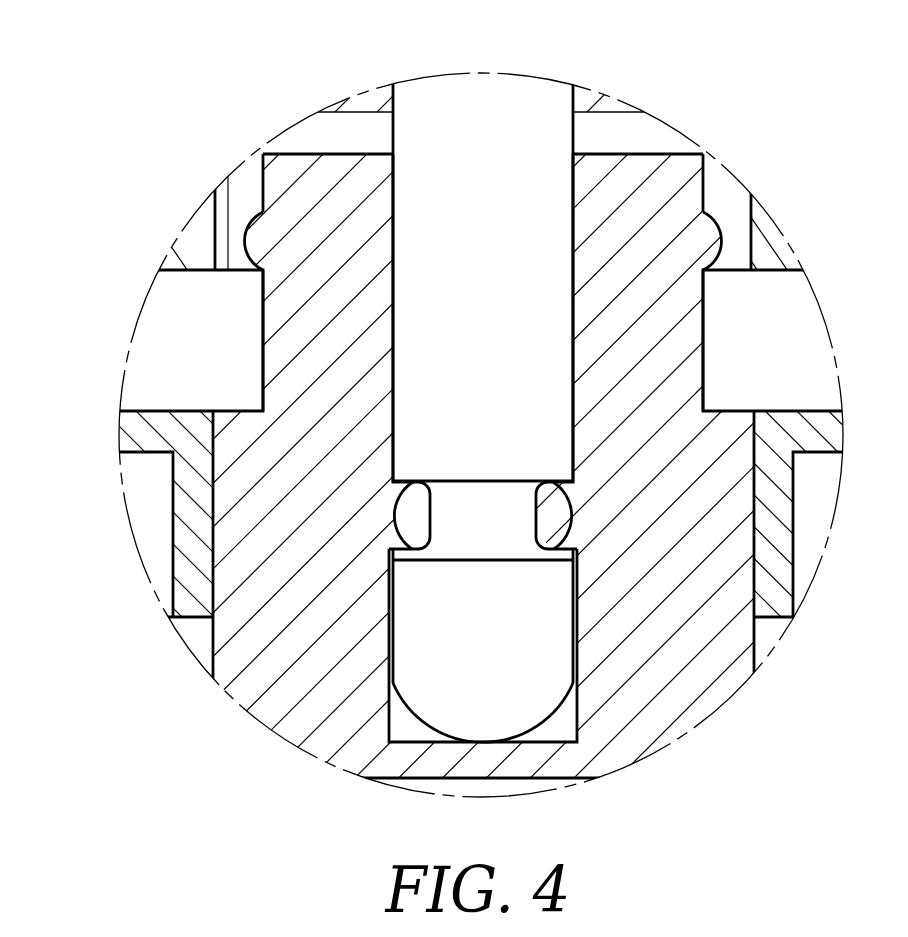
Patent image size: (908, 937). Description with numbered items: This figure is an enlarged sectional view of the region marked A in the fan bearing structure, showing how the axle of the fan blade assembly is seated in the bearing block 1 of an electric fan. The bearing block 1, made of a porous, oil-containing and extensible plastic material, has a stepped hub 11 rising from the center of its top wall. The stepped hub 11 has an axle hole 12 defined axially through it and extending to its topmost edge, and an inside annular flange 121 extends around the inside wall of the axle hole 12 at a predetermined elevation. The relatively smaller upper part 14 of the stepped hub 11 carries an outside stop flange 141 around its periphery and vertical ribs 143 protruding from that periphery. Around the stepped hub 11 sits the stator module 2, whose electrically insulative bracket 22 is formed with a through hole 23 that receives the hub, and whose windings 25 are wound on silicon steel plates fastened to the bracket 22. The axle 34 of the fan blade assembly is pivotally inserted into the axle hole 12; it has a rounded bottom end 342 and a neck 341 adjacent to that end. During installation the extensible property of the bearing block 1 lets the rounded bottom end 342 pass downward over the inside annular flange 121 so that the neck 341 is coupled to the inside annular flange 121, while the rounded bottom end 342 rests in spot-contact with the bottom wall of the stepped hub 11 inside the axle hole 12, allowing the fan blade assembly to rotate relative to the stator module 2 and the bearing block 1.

The bearing block 1 is at (454, 468).
The stepped hub 11 is at (483, 594).
The axle hole 12 is at (483, 448).
The inside annular flange 121 is at (482, 515).
The relatively smaller upper part 14 is at (483, 282).
The outside stop flange 141 is at (712, 241).
The vertical ribs 143 is at (254, 241).
The stator module 2 is at (454, 468).
The electrically insulative bracket 22 is at (483, 534).
The through hole 23 is at (453, 200).
The windings 25 is at (483, 340).
The axle 34 is at (483, 371).
The neck 341 is at (483, 515).
The rounded bottom end 342 is at (483, 712).
The enlarged region A is at (702, 120).